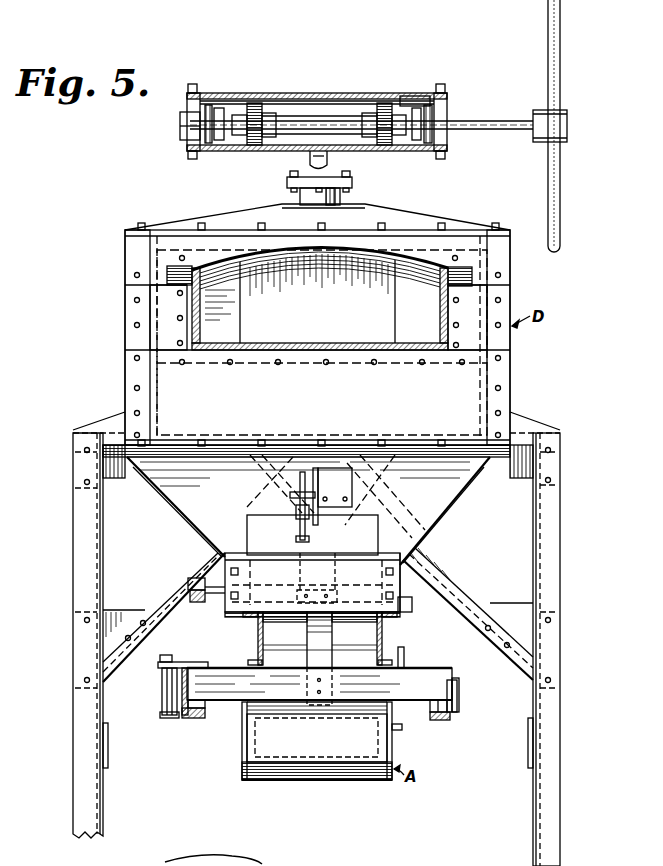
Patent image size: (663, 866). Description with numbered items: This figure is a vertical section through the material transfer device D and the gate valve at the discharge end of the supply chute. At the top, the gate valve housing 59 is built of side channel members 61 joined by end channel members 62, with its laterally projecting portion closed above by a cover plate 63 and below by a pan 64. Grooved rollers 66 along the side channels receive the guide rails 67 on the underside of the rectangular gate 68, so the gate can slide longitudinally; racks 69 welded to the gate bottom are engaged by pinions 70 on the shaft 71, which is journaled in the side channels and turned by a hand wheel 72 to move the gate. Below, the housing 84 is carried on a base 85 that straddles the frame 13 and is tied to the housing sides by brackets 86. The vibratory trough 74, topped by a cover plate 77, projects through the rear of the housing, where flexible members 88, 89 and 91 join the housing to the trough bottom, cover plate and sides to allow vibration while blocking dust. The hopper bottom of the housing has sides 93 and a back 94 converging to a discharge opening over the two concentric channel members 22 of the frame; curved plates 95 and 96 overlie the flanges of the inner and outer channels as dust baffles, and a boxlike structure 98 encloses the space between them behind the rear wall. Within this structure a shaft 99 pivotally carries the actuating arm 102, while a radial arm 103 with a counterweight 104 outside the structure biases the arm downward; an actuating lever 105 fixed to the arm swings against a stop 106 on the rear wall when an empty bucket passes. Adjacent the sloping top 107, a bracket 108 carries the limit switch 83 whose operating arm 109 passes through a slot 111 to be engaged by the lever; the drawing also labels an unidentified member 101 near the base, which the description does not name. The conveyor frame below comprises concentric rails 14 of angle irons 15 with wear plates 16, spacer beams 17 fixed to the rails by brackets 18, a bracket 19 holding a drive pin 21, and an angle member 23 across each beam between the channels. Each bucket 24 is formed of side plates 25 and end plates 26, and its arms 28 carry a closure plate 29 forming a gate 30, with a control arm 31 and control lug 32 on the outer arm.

The rigid annular frame 13 is at (420, 667).
The concentric rails 14 is at (170, 720).
The angle irons 15 is at (165, 692).
The wear plates 16 is at (188, 718).
The spacer beams 17 is at (440, 682).
The brackets 18 is at (200, 705).
The bracket 19 is at (188, 661).
The drive pin 21 is at (166, 655).
The circular channel members 22 is at (257, 622).
The angle member 23 is at (290, 672).
The bucket 24 is at (242, 740).
The vertical side plates 25 is at (316, 733).
The inclined end plates 26 is at (317, 734).
The arms 28 is at (242, 758).
The closure plate 29 is at (310, 770).
The gate 30 is at (352, 772).
The control arm 31 is at (404, 655).
The control lug 32 is at (402, 728).
The gate valve housing 59 is at (342, 92).
The side channel members 61 is at (188, 108).
The end channel members 62 is at (291, 114).
The cover plate 63 is at (406, 95).
The pan 64 is at (410, 152).
The grooved rollers 66 is at (219, 106).
The guide rails 67 is at (208, 104).
The rectangular gate 68 is at (315, 100).
The racks 69 is at (255, 102).
The pinions 70 is at (252, 147).
The shaft 71 is at (311, 136).
The hand wheel 72 is at (561, 198).
The trough 74 is at (288, 340).
The cover plate 77 is at (386, 268).
The limit switch 83 is at (318, 506).
The housing 84 is at (512, 369).
The base 85 is at (562, 576).
The brackets 86 is at (112, 426).
The flexible member 88 is at (412, 425).
The flexible member 89 is at (458, 246).
The flexible members 91 is at (128, 327).
The sides 93 is at (190, 518).
The back 94 is at (202, 476).
The curved plate 95 is at (226, 612).
The curved plate 96 is at (404, 612).
The boxlike structure 98 is at (372, 582).
The shaft 99 is at (312, 582).
The diagonal brace 101 is at (200, 572).
The actuating arm 102 is at (333, 690).
The radial arm 103 is at (190, 596).
The counterweight 104 is at (190, 582).
The actuating lever 105 is at (319, 578).
The stop 106 is at (312, 535).
The sloping top 107 is at (378, 536).
The bracket 108 is at (345, 490).
The operating arm 109 is at (298, 519).
The slot 111 is at (300, 525).